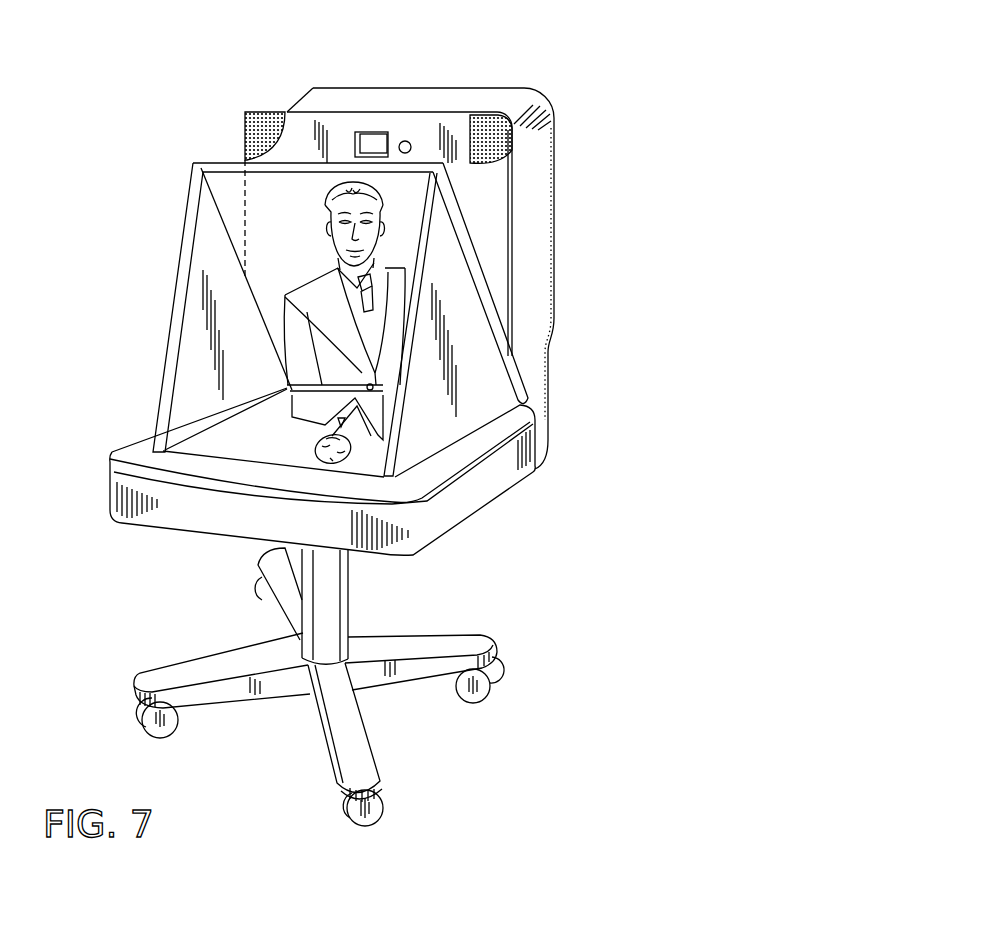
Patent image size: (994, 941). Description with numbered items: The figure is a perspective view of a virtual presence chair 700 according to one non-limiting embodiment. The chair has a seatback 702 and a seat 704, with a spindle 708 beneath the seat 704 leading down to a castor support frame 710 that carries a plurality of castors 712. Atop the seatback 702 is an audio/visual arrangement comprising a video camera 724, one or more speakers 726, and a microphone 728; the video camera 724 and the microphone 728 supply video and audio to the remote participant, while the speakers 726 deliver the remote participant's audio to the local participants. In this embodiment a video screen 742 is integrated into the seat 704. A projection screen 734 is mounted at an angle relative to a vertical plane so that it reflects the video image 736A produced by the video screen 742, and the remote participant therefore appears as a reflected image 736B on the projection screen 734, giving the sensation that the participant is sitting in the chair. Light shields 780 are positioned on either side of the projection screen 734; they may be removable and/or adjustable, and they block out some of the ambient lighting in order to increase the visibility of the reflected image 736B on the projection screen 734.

The virtual presence chair 700 is at (566, 145).
The seatback 702 is at (545, 218).
The seat 704 is at (480, 487).
The spindle 708 is at (347, 600).
The castor support frame 710 is at (253, 653).
The castors 712 is at (140, 722).
The video camera 724 is at (362, 131).
The speakers 726 is at (252, 118).
The microphone 728 is at (408, 143).
The projection screen 734 is at (210, 163).
The video image 736A is at (273, 437).
The reflected image 736B is at (300, 242).
The video screen 742 is at (215, 438).
The light shields 780 is at (160, 322).